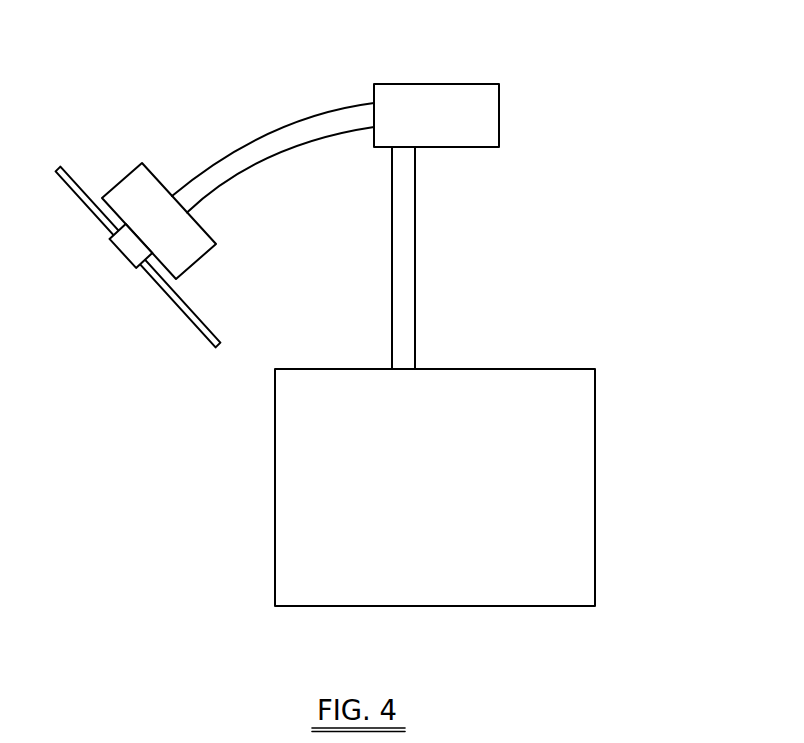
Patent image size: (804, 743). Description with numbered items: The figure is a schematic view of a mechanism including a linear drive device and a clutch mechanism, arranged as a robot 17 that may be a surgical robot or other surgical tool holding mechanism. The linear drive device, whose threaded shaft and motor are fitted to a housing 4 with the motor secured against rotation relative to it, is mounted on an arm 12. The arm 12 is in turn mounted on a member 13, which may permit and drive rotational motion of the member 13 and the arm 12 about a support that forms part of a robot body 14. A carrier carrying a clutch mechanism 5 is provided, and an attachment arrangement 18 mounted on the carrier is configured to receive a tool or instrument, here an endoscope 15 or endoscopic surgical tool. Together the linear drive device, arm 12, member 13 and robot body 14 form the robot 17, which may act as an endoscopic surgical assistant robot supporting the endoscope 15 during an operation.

The housing 4 is at (137, 184).
The clutch mechanism 5 is at (123, 244).
The arm 12 is at (318, 120).
The member 13 is at (476, 95).
The robot body 14 is at (439, 487).
The endoscope 15 is at (216, 350).
The robot 17 is at (609, 492).
The attachment arrangement 18 is at (135, 268).